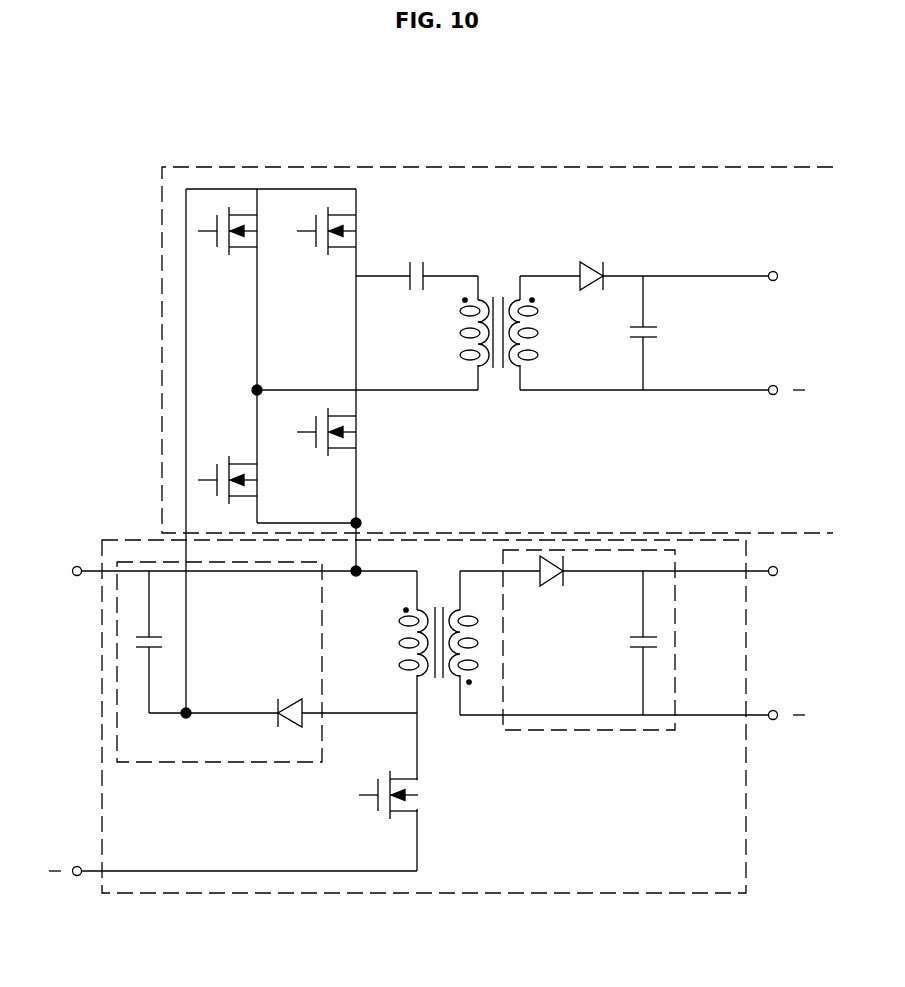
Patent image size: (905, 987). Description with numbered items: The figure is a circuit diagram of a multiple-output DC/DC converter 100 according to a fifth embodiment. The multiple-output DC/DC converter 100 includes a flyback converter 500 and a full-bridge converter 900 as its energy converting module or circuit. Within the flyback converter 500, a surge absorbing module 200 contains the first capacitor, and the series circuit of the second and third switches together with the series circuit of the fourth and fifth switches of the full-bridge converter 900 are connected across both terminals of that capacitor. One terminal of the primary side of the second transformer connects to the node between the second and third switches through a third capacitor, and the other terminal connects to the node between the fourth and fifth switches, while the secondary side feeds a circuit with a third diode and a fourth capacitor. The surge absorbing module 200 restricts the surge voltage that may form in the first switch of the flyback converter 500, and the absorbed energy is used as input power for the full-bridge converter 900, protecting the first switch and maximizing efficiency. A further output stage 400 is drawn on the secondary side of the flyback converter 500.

The multiple-output DC/DC converter 100 is at (123, 88).
The surge absorbing module 200 is at (217, 762).
The output rectifying unit 400 is at (588, 730).
The flyback converter 500 is at (433, 893).
The full-bridge converter 900 is at (497, 165).